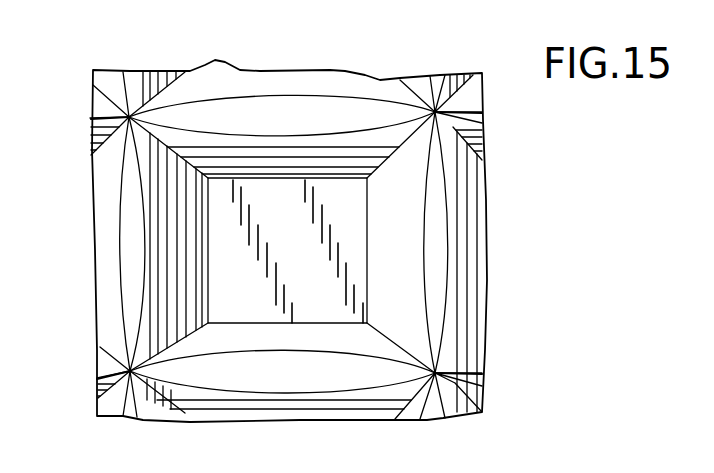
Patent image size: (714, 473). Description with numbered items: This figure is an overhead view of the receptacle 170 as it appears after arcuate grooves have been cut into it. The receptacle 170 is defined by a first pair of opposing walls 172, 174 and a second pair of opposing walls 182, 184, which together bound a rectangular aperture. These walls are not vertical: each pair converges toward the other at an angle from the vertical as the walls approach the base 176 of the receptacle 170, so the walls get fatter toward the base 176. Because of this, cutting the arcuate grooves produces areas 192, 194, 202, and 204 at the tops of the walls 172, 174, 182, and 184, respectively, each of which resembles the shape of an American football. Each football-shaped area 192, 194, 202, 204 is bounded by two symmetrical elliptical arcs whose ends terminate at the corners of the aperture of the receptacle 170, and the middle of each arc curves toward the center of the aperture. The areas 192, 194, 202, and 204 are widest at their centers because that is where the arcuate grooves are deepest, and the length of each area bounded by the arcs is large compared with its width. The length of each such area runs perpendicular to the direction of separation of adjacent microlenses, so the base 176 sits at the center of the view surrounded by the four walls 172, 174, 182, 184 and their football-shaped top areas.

The receptacle 170 is at (540, 310).
The wall 172 is at (160, 216).
The wall 174 is at (407, 208).
The base 176 is at (218, 198).
The wall 182 is at (362, 150).
The wall 184 is at (268, 345).
The football-shaped area 192 is at (133, 291).
The football-shaped area 194 is at (443, 277).
The football-shaped area 202 is at (278, 115).
The football-shaped area 204 is at (340, 380).